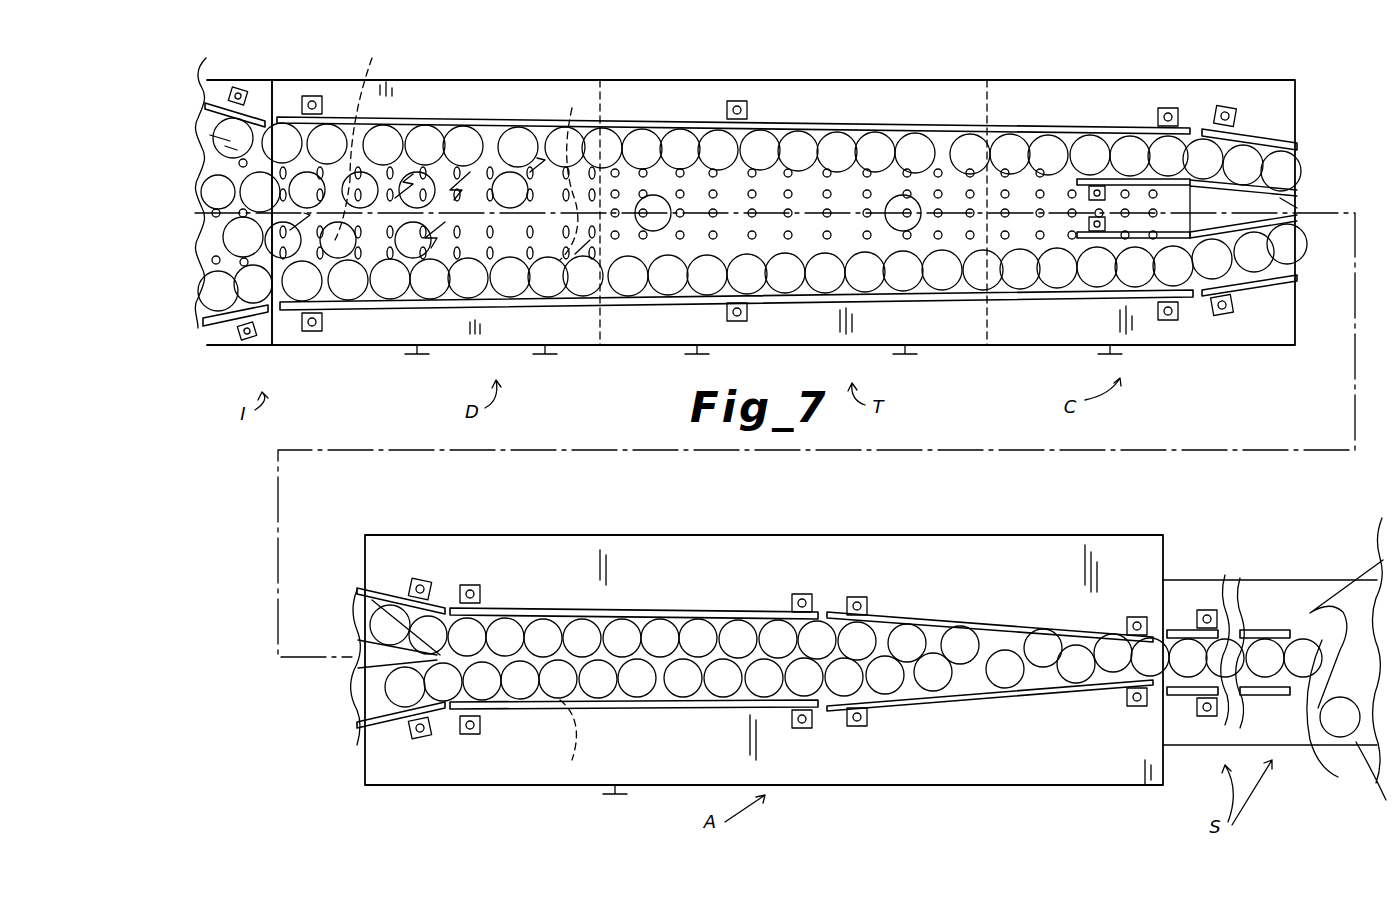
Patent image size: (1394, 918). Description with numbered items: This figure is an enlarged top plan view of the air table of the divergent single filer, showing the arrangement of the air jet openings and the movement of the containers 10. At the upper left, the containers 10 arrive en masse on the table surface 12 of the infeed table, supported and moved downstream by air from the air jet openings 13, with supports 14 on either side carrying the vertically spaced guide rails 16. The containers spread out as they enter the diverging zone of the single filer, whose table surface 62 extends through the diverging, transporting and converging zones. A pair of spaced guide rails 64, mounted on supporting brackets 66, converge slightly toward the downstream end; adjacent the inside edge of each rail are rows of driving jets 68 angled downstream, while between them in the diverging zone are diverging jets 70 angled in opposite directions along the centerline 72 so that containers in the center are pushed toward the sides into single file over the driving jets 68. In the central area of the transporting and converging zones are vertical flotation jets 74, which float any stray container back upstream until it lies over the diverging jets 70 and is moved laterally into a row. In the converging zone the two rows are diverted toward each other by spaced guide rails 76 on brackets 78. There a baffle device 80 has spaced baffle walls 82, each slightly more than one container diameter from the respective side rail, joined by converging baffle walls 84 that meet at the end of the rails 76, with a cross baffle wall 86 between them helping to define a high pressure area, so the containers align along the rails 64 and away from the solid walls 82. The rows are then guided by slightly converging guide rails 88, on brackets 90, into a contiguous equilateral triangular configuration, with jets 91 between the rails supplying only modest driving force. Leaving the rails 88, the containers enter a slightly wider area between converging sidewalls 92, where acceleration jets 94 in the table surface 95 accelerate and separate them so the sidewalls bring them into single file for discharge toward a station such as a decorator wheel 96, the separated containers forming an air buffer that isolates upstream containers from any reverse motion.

The containers 10 is at (562, 145).
The table surface 12 is at (212, 280).
The air jet openings 13 is at (215, 136).
The supports 14 is at (262, 95).
The guide rails 16 is at (205, 100).
The table surface 62 is at (530, 88).
The guide rails 64 is at (472, 115).
The supporting brackets 66 is at (312, 97).
The driving jets 68 is at (420, 135).
The diverging jets 70 is at (542, 312).
The centerline 72 is at (848, 215).
The flotation jets 74 is at (712, 192).
The guide rails 76 is at (1270, 138).
The brackets 78 is at (1225, 106).
The baffle device 80 is at (1107, 160).
The baffle walls 82 is at (1113, 240).
The converging baffle walls 84 is at (1290, 212).
The cross baffle wall 86 is at (1185, 192).
The guide rails 88 is at (640, 608).
The brackets 90 is at (476, 585).
The jets 91 is at (568, 700).
The converging sidewalls 92 is at (887, 615).
The acceleration jets 94 is at (1015, 650).
The table surface 95 is at (557, 548).
The decorator wheel 96 is at (1356, 595).